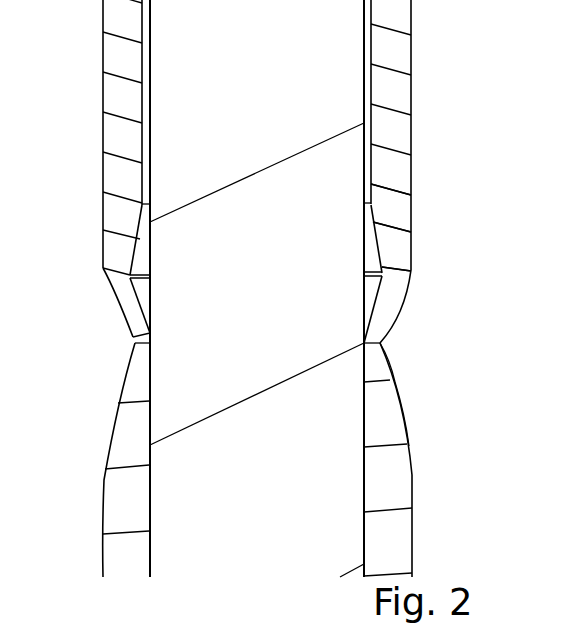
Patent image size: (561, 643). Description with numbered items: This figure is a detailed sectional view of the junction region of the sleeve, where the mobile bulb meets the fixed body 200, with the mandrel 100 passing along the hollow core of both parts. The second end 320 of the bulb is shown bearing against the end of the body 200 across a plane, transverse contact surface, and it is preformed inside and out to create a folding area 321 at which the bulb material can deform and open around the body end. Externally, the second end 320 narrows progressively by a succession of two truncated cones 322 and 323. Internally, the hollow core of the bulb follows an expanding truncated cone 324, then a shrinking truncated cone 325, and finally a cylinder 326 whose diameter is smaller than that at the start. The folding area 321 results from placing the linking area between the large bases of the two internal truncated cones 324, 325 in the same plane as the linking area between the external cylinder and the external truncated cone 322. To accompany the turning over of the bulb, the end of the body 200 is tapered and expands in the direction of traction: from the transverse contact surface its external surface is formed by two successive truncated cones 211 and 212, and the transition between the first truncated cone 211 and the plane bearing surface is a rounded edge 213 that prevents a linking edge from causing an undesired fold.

The mandrel 100 is at (337, 193).
The body 200 is at (390, 537).
The first truncated cone 211 is at (380, 368).
The second truncated cone 212 is at (390, 425).
The rounded edge 213 is at (380, 343).
The second end of the bulb 320 is at (402, 227).
The folding area 321 is at (382, 275).
The external truncated cone 322 is at (117, 288).
The external truncated cone 323 is at (127, 308).
The expanding truncated cone 324 is at (142, 243).
The shrinking truncated cone 325 is at (373, 293).
The cylinder 326 is at (149, 333).